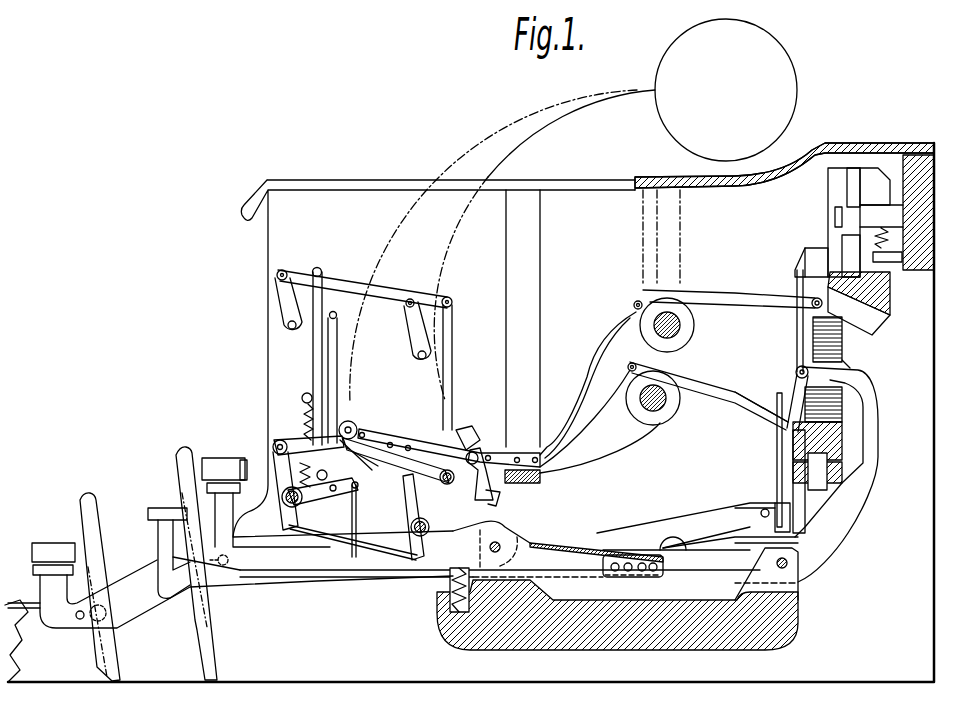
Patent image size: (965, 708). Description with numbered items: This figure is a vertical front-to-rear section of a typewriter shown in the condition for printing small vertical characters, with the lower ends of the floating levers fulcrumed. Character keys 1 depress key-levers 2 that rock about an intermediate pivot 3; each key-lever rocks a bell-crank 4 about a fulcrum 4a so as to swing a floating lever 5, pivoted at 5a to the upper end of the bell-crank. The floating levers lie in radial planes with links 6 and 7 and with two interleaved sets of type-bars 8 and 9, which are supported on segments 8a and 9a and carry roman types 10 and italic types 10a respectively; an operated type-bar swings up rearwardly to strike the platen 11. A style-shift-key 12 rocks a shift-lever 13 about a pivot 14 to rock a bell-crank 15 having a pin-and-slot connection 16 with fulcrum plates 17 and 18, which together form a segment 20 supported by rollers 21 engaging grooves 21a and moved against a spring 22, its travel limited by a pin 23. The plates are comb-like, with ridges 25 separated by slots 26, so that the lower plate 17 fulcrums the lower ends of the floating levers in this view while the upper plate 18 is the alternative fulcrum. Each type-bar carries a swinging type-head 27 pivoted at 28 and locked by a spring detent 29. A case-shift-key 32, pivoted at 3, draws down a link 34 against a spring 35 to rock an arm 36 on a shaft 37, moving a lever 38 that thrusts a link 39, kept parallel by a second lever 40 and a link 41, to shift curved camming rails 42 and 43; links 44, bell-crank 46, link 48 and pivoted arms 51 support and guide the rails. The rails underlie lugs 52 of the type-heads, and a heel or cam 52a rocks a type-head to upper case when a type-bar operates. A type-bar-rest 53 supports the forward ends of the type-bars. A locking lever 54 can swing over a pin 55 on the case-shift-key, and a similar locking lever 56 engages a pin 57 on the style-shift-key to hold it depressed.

The character keys 1 is at (175, 505).
The key-levers 2 is at (573, 550).
The intermediate pivot 3 is at (488, 548).
The bell-crank 4 is at (850, 528).
The fulcrum 4a is at (788, 563).
The floating lever 5 is at (798, 343).
The pivot 5a is at (796, 372).
The link 6 is at (722, 398).
The link 7 is at (752, 300).
The type-bars 8 is at (612, 436).
The segment 8a is at (657, 408).
The type-bars 9 is at (592, 368).
The segment 9a is at (680, 325).
The roman types 10 is at (475, 426).
The italic types 10a is at (408, 402).
The platen 11 is at (703, 30).
The style-shift-key 12 is at (32, 549).
The shift-lever 13 is at (642, 549).
The pivot 14 is at (673, 540).
The bell-crank 15 is at (793, 482).
The pin-and-slot connection 16 is at (777, 396).
The lower fulcrum plate 17 is at (830, 449).
The upper fulcrum plate 18 is at (885, 312).
The segment 20 is at (824, 246).
The rollers 21 is at (845, 202).
The grooves 21a is at (868, 175).
The spring 22 is at (881, 226).
The pin 23 is at (893, 262).
The teeth or ridges 25 is at (842, 344).
The slots 26 is at (857, 367).
The swinging type-head 27 is at (452, 475).
The pivot 28 is at (356, 425).
The spring detent 29 is at (404, 440).
The case-shift-key 32 is at (218, 457).
The link 34 is at (356, 520).
The spring 35 is at (305, 412).
The arm 36 is at (322, 500).
The shaft 37 is at (283, 500).
The lever 38 is at (275, 472).
The link 39 is at (385, 470).
The second lever 40 is at (424, 510).
The link 41 is at (390, 553).
The camming rail 42 is at (313, 352).
The camming rail 43 is at (452, 335).
The link 44 is at (355, 288).
The bell-crank 46 is at (283, 312).
The link 48 is at (337, 335).
The pivoted arms 51 is at (410, 336).
The lug 52 is at (300, 442).
The heel or cam 52a is at (495, 498).
The type-bar-rest 53 is at (540, 480).
The locking lever 54 is at (182, 455).
The pin 55 is at (231, 558).
The locking lever 56 is at (82, 498).
The pin 57 is at (79, 621).